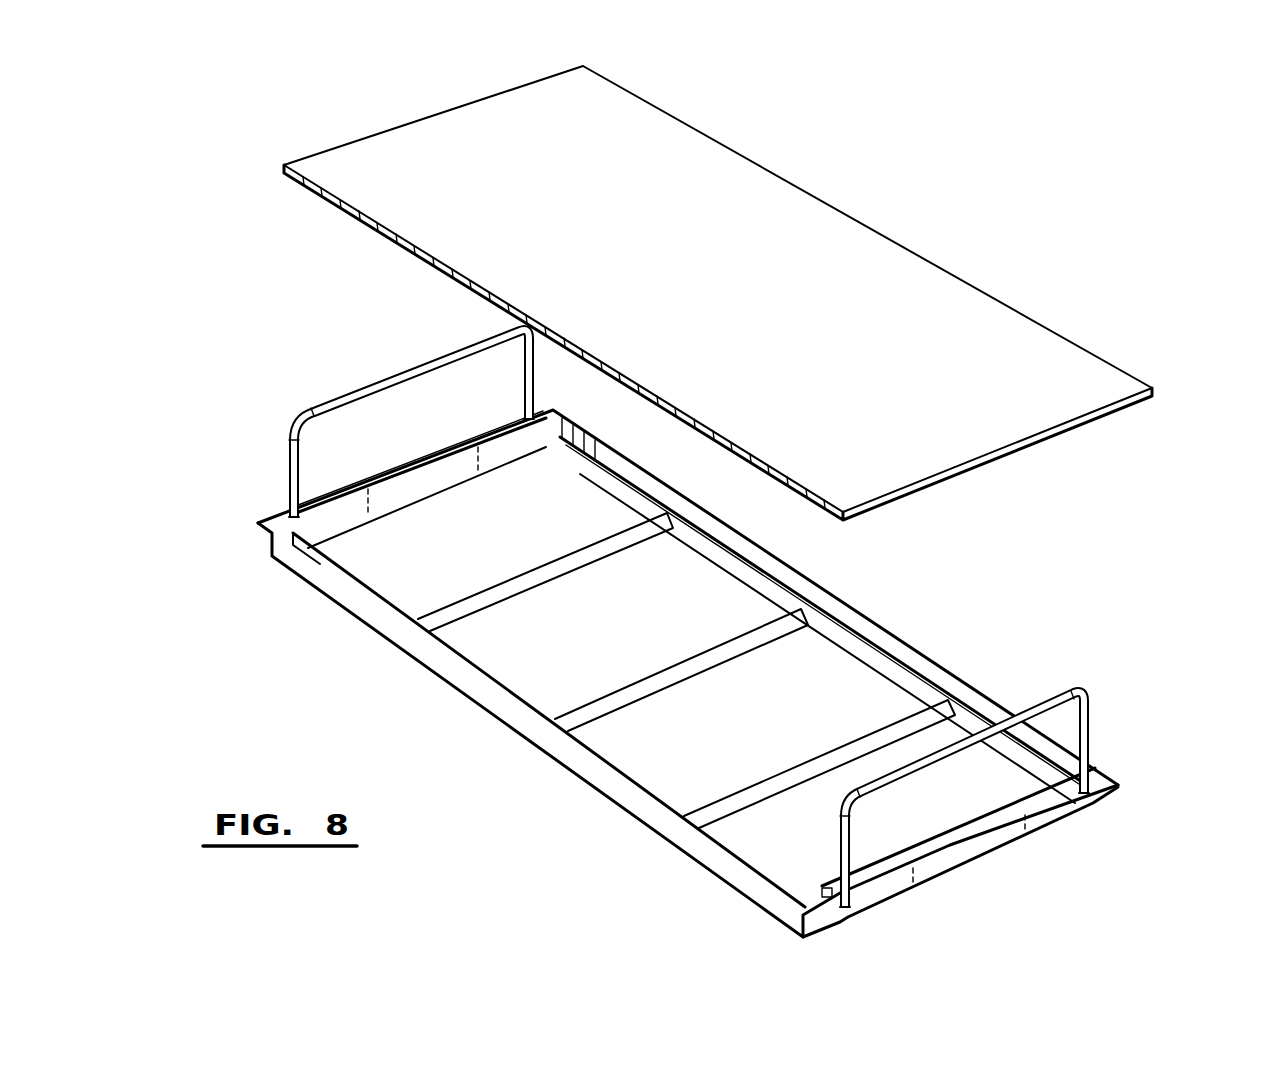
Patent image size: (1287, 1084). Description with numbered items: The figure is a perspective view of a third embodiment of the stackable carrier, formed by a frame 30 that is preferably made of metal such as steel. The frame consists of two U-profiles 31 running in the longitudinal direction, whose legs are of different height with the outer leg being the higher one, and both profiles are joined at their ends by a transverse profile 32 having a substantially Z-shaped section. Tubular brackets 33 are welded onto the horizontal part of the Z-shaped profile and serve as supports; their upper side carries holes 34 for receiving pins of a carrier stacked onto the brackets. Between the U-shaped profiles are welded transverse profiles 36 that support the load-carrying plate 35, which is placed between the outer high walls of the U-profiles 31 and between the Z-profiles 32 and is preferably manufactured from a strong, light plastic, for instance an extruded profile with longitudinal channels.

The frame 30 is at (1108, 698).
The U-profiles 31 is at (905, 650).
The transverse profile 32 is at (492, 428).
The tubular brackets 33 is at (293, 468).
The holes 34 is at (482, 347).
The plate 35 is at (918, 272).
The transverse profiles 36 is at (690, 658).